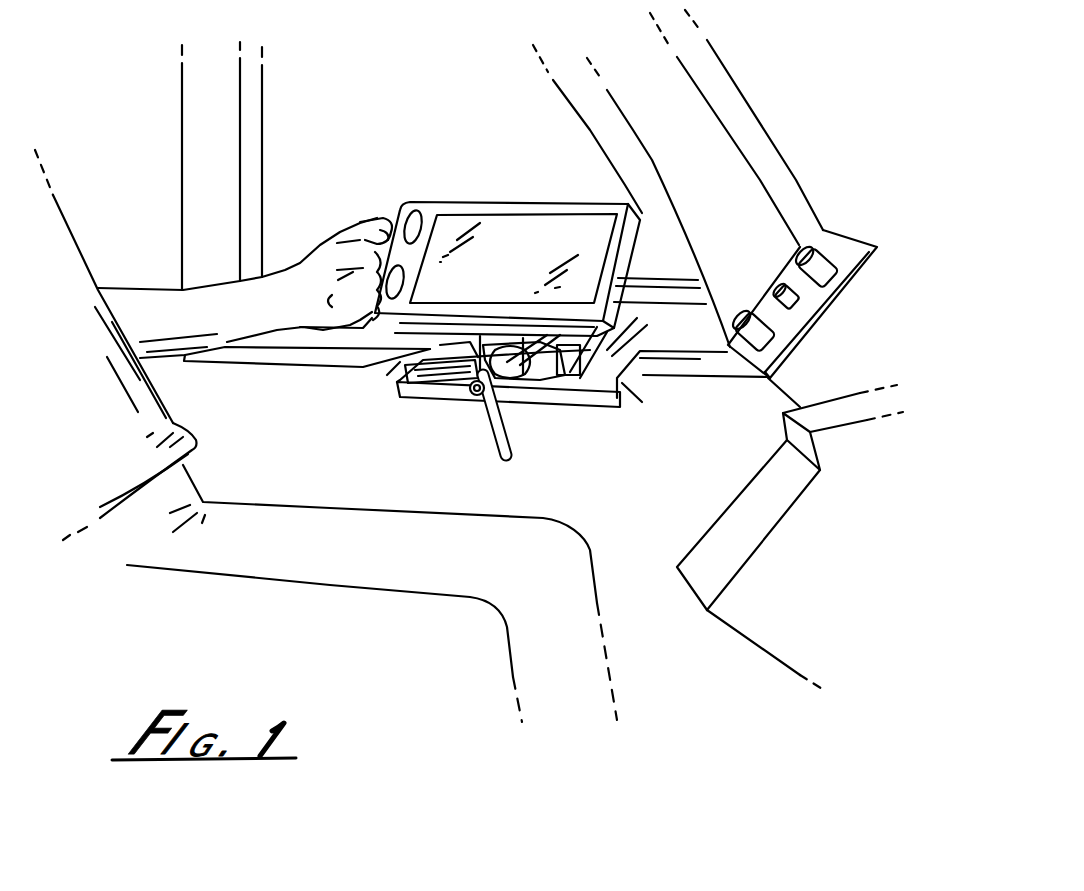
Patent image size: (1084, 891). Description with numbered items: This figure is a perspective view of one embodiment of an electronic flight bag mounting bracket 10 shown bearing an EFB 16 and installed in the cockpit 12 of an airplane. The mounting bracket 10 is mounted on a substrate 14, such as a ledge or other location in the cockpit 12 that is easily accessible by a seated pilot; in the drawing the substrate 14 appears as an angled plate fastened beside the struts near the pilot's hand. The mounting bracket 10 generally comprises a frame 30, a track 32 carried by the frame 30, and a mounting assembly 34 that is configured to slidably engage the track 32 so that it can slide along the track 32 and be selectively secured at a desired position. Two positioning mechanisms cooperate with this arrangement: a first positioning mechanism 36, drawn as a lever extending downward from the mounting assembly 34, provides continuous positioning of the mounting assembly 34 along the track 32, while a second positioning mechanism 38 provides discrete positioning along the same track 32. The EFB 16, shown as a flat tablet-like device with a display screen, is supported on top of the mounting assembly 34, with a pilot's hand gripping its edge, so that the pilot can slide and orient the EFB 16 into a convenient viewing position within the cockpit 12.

The mounting bracket 10 is at (612, 372).
The cockpit 12 is at (800, 503).
The substrate 14 is at (667, 320).
The EFB 16 is at (562, 128).
The frame 30 is at (415, 392).
The track 32 is at (467, 377).
The mounting assembly 34 is at (547, 385).
The first positioning mechanism 36 is at (497, 452).
The second positioning mechanism 38 is at (407, 355).